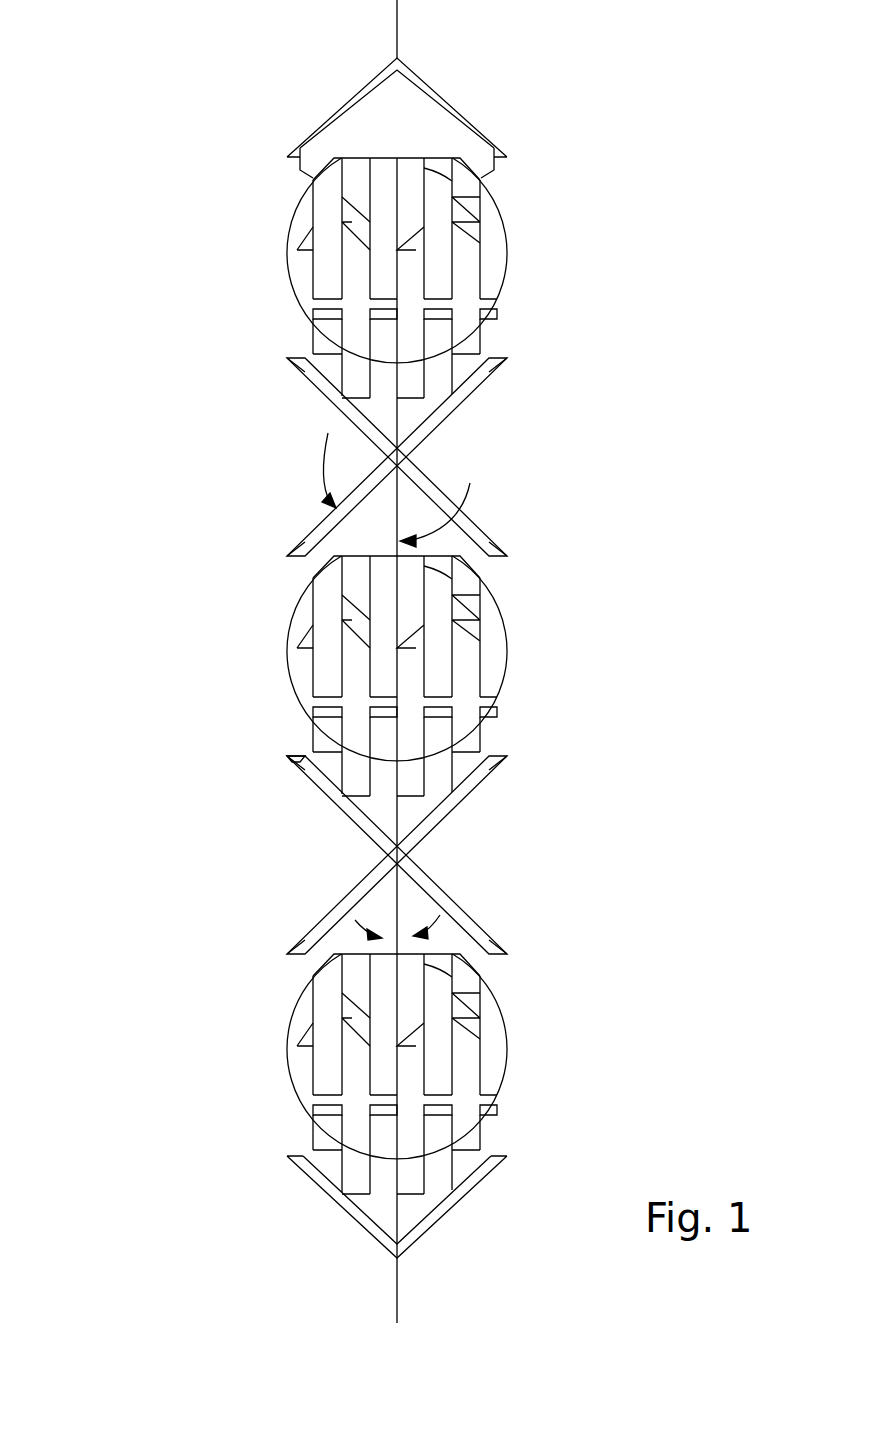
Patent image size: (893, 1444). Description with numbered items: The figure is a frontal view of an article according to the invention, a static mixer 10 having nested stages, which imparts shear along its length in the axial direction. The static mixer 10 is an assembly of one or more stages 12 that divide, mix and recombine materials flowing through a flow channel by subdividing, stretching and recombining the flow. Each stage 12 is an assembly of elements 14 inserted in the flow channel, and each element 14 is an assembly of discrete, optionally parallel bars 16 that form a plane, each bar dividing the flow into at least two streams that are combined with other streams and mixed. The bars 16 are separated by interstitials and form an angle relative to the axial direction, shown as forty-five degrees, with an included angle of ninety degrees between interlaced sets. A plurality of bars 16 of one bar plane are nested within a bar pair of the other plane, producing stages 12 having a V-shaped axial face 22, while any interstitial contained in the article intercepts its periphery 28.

The static mixer 10 is at (330, 664).
The stage 12 is at (330, 878).
The element 14 is at (394, 656).
The bar 16 is at (325, 220).
The V-shaped axial face 22 is at (397, 1258).
The periphery 28 is at (290, 755).